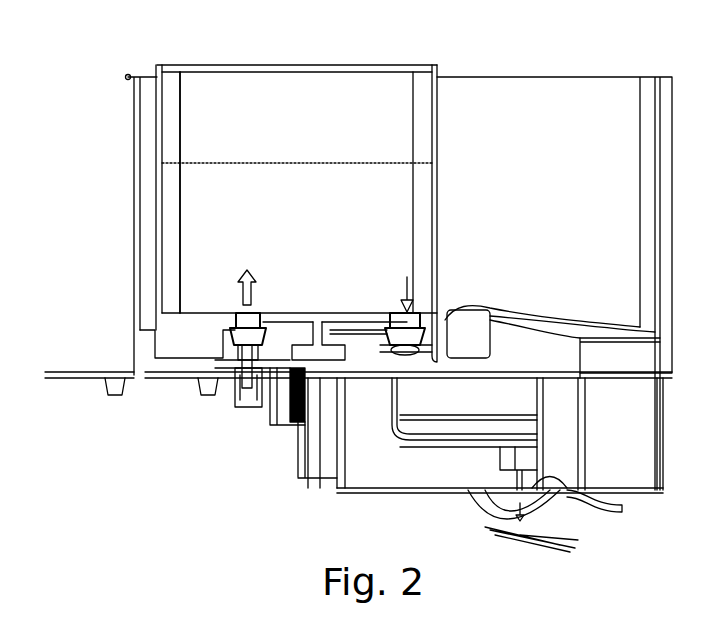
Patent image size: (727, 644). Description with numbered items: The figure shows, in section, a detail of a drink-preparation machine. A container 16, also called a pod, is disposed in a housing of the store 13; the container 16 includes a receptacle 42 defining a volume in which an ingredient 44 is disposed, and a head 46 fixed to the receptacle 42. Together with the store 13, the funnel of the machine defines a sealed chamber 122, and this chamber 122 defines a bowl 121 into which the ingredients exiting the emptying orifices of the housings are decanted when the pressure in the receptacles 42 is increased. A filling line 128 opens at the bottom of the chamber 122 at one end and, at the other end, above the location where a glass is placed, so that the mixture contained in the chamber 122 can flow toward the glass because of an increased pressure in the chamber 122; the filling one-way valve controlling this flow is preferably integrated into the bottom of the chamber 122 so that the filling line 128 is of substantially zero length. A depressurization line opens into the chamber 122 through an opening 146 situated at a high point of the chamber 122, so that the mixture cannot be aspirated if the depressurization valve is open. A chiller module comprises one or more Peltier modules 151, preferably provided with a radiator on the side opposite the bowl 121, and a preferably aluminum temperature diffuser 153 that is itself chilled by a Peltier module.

The container 16 is at (360, 75).
The receptacle 42 is at (213, 121).
The ingredient 44 is at (220, 200).
The head 46 is at (225, 352).
The store 13 is at (178, 368).
The bowl 121 is at (410, 438).
The Peltier module 151 is at (322, 470).
The temperature diffuser 153 is at (365, 463).
The opening 146 is at (438, 388).
The sealed chamber 122 is at (472, 412).
The filling line 128 is at (568, 497).